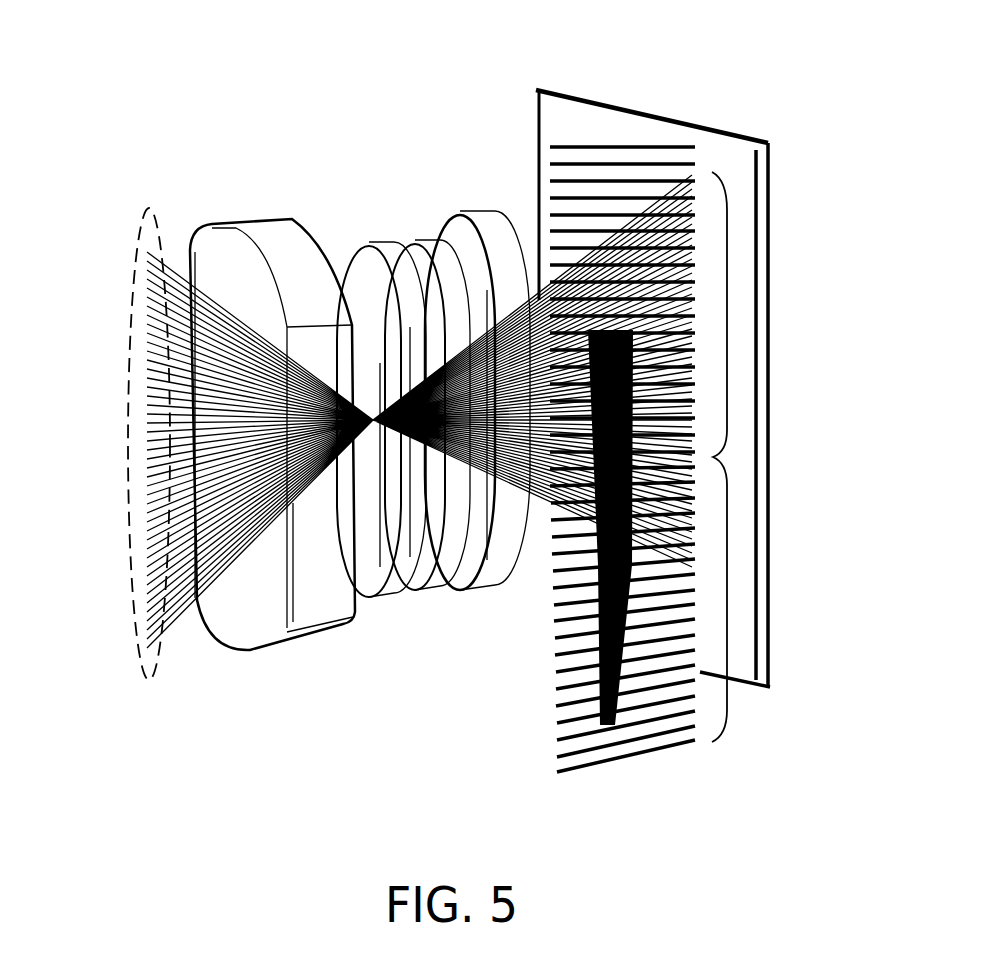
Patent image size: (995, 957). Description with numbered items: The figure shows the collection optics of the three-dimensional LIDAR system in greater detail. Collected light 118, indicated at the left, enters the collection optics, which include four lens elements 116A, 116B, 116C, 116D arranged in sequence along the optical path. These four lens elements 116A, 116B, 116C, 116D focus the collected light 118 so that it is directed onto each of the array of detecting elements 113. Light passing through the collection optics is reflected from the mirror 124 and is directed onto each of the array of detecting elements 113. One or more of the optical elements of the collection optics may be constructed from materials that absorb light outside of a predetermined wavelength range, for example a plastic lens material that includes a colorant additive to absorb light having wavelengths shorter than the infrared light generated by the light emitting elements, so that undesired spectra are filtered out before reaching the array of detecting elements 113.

The collected light 118 is at (130, 253).
The first lens element 116A is at (243, 237).
The second lens element 116B is at (333, 247).
The third lens element 116C is at (397, 247).
The fourth lens element 116D is at (468, 217).
The mirror 124 is at (608, 123).
The array of detecting elements 113 is at (713, 458).